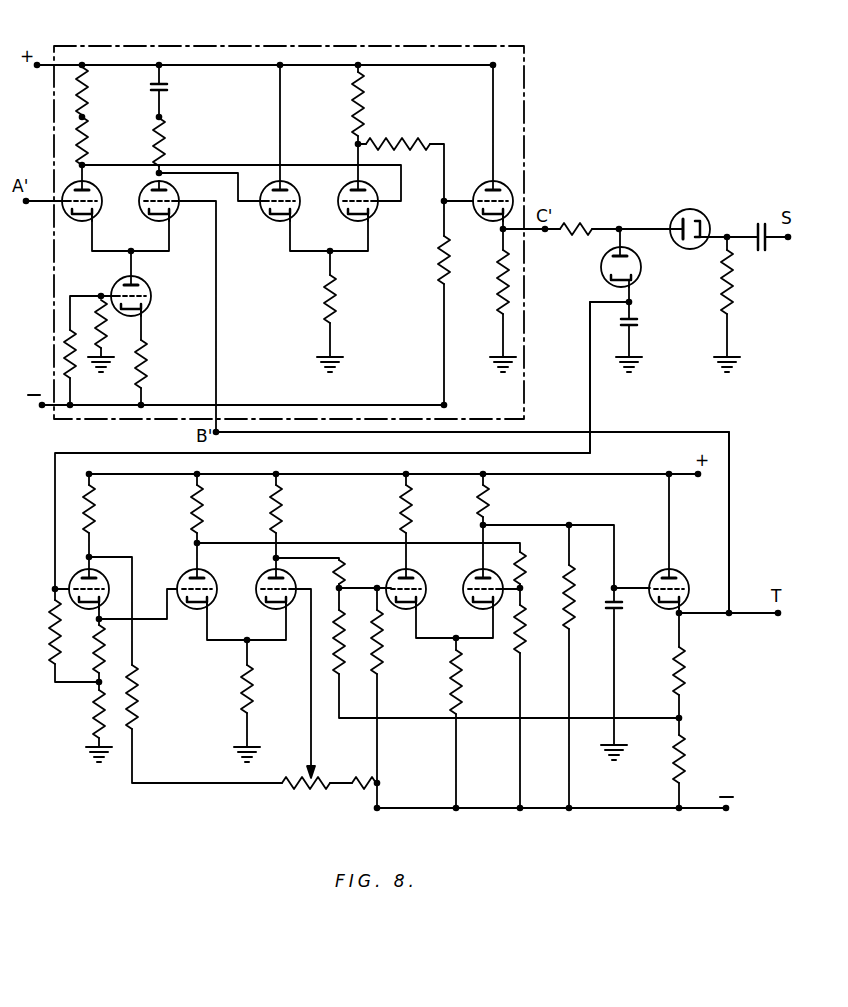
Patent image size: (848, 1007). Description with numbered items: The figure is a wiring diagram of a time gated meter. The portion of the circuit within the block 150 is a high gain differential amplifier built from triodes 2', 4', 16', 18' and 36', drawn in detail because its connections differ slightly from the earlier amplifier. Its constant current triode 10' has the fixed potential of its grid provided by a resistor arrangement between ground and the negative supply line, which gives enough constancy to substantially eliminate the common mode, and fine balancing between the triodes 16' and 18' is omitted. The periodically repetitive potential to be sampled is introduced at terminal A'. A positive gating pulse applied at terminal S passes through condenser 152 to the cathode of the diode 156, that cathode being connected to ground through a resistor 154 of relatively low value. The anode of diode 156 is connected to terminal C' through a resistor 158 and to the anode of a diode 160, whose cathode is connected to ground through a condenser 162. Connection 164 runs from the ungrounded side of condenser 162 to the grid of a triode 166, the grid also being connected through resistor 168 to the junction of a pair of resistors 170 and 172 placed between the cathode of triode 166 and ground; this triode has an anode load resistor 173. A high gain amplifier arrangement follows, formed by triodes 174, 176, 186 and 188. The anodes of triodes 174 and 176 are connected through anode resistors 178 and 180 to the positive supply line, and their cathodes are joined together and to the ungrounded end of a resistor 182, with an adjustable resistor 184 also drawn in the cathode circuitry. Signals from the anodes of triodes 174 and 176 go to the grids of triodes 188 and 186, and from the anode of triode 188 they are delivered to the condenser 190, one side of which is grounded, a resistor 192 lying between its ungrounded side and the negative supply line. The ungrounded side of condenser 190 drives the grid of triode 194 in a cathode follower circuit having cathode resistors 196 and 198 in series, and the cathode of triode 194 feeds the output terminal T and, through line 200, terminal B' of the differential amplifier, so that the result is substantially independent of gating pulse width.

The differential amplifier block 150 is at (294, 47).
The triode 2' is at (94, 201).
The triode 4' is at (171, 201).
The triode 16' is at (296, 200).
The triode 18' is at (377, 209).
The triode 36' is at (516, 189).
The constant current triode 10' is at (147, 293).
The resistor 158 is at (570, 223).
The diode 156 is at (677, 210).
The condenser 152 is at (755, 225).
The resistor 154 is at (738, 283).
The diode 160 is at (601, 272).
The condenser 162 is at (637, 323).
The connection 164 is at (599, 414).
The triode 166 is at (72, 578).
The anode load resistor 173 is at (100, 512).
The anode resistor 178 is at (202, 515).
The anode resistor 180 is at (288, 512).
The triode 174 is at (186, 574).
The triode 176 is at (264, 575).
The triode 186 is at (390, 578).
The triode 188 is at (470, 578).
The triode 194 is at (656, 574).
The line 200 is at (731, 508).
The resistor 168 is at (55, 650).
The resistor 172 is at (95, 652).
The resistor 170 is at (95, 705).
The resistor 182 is at (240, 688).
The potentiometer 184 is at (322, 775).
The condenser 190 is at (620, 610).
The resistor 192 is at (565, 628).
The cathode resistor 196 is at (690, 688).
The cathode resistor 198 is at (690, 770).